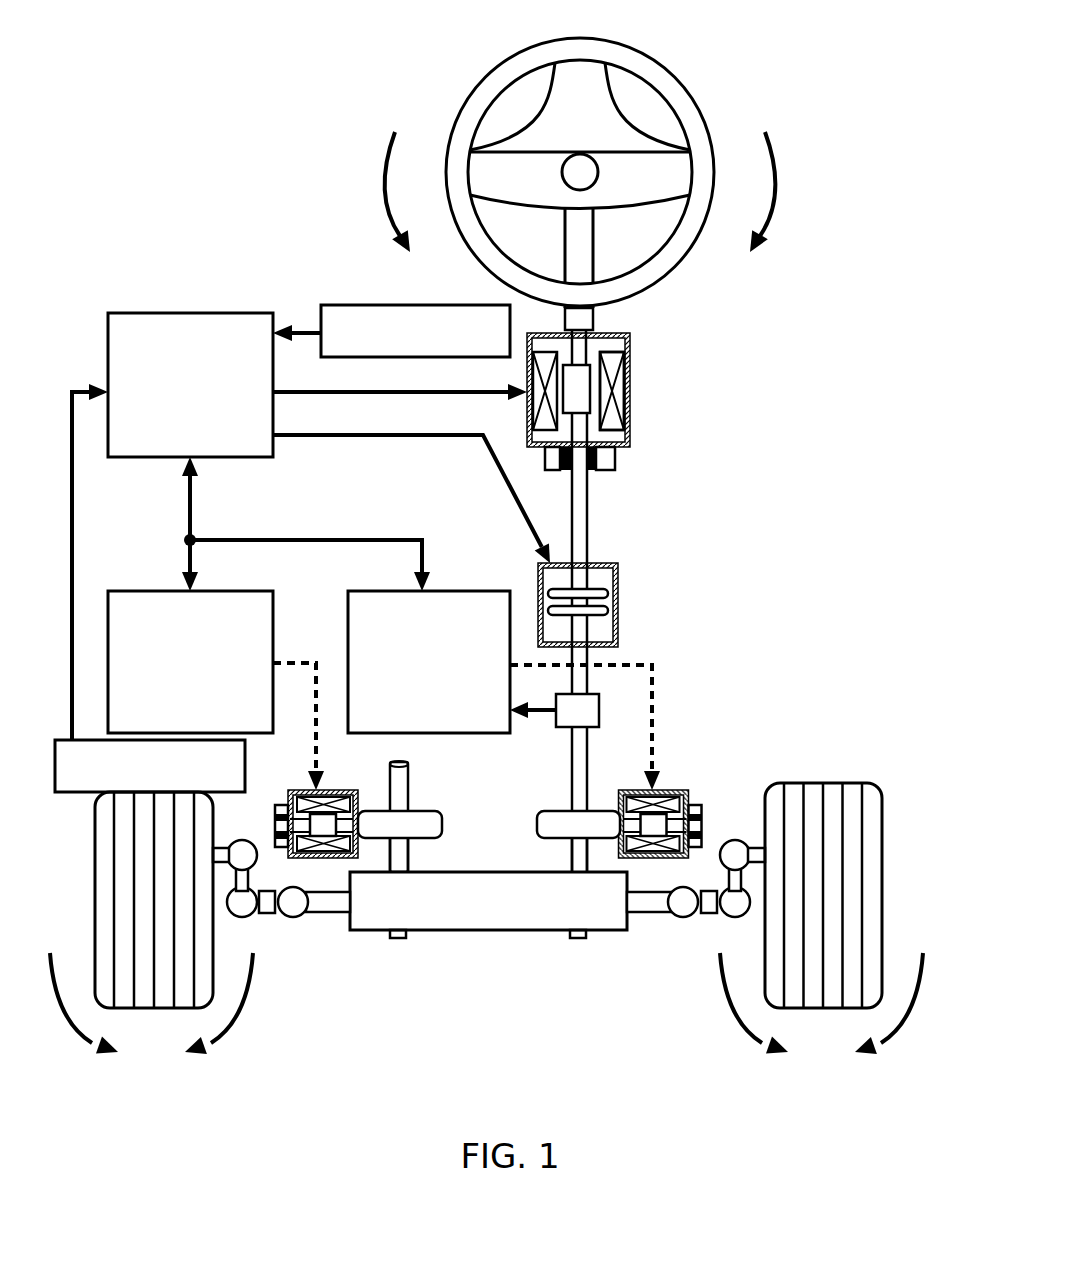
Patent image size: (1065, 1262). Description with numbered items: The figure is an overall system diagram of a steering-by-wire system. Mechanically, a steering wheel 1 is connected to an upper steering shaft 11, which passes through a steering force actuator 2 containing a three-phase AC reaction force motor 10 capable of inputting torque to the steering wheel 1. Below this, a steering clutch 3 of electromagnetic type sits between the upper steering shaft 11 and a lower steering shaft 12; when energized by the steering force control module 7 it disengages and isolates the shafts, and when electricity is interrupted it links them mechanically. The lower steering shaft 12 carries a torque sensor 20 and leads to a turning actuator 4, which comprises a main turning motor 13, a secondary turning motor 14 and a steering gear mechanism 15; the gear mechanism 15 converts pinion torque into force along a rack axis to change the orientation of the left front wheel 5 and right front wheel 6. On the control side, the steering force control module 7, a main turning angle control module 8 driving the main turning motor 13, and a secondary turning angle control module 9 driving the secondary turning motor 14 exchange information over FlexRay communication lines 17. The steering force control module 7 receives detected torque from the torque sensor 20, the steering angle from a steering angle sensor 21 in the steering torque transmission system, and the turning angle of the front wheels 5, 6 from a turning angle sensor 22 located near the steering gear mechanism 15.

The steering wheel 1 is at (672, 272).
The steering force actuator 2 is at (638, 392).
The steering clutch 3 is at (626, 628).
The turning actuator 4 is at (489, 879).
The left front wheel 5 is at (160, 1010).
The right front wheel 6 is at (833, 1010).
The steering force control module 7 is at (210, 310).
The main turning angle control module 8 is at (433, 740).
The secondary turning angle control module 9 is at (280, 627).
The reaction force motor 10 is at (632, 445).
The upper steering shaft 11 is at (590, 505).
The lower steering shaft 12 is at (567, 736).
The main turning motor 13 is at (690, 795).
The secondary turning motor 14 is at (305, 790).
The steering gear mechanism 15 is at (462, 932).
The FlexRay communication lines 17 is at (258, 542).
The torque sensor 20 is at (585, 727).
The steering angle sensor 21 is at (345, 305).
The turning angle sensor 22 is at (87, 795).